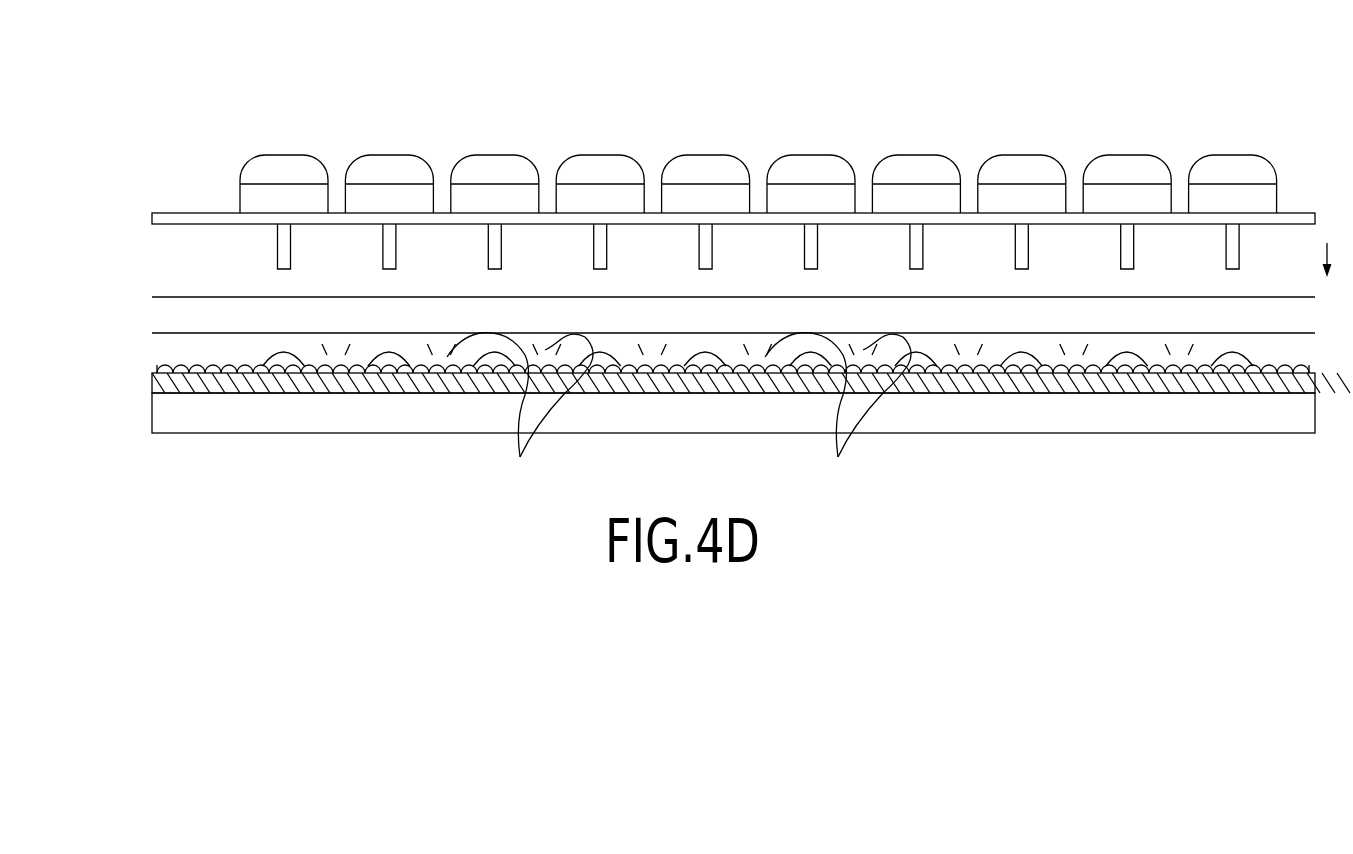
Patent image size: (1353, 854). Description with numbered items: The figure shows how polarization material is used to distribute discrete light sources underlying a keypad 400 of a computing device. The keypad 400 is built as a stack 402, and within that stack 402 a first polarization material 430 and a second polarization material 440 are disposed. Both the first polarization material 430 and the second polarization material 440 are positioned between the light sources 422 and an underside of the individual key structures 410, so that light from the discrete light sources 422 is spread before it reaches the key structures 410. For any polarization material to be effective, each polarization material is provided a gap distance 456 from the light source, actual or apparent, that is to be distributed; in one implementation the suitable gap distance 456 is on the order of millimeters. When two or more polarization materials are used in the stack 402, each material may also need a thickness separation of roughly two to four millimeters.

The keypad 400 is at (1192, 74).
The stack 402 is at (85, 157).
The key structures 410 is at (493, 155).
The light sources 422 is at (679, 414).
The first polarization material 430 is at (167, 333).
The second polarization material 440 is at (188, 297).
The gap distance 456 is at (143, 333).